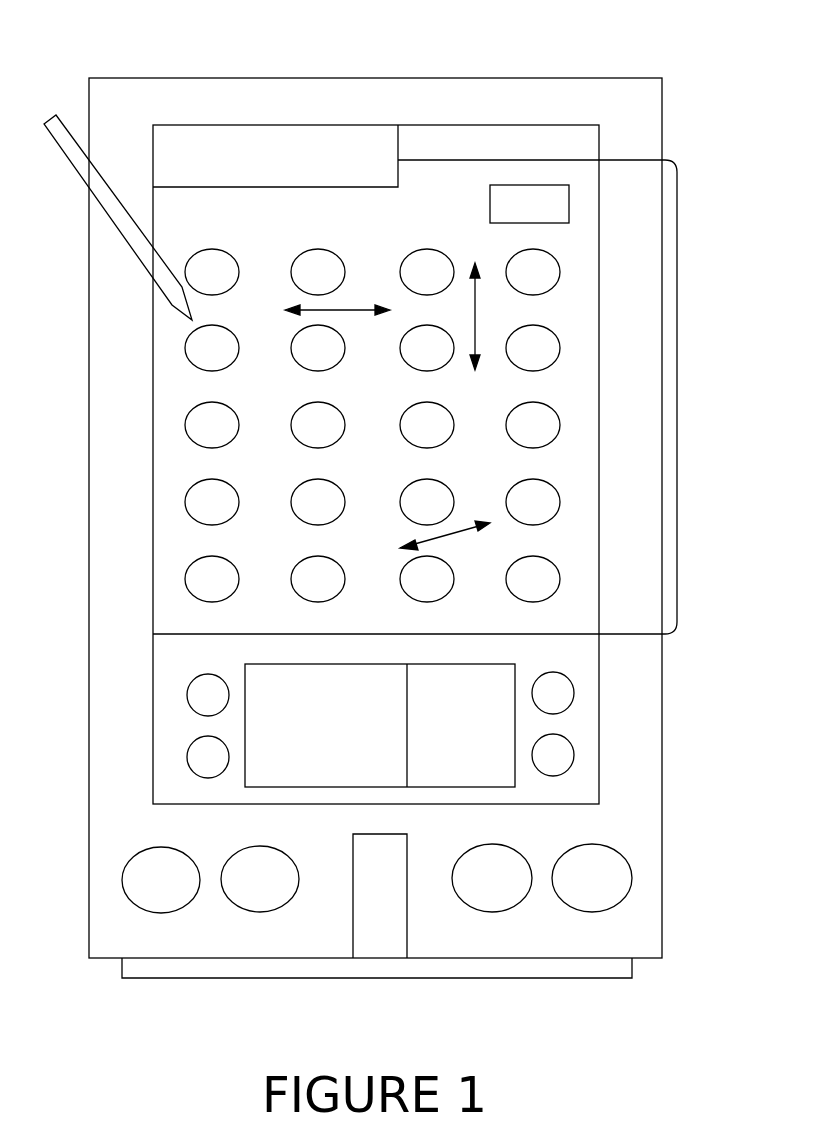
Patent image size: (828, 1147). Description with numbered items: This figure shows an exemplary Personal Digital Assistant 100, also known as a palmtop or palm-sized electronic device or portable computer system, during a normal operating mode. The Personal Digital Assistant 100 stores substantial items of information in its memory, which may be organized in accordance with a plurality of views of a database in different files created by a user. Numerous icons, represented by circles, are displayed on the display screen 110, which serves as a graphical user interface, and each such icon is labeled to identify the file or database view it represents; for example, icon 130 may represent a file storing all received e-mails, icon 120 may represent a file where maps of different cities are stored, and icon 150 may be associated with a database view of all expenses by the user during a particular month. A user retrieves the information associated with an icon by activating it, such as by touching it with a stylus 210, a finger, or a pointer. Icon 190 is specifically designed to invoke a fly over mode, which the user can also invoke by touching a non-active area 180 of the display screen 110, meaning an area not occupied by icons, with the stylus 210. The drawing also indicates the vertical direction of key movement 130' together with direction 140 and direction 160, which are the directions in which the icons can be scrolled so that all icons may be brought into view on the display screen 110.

The Personal Digital Assistant 100 is at (57, 28).
The display screen 110 is at (677, 378).
The icon 120 is at (548, 357).
The icon 130 is at (372, 425).
The vertical direction of key movement 130' is at (502, 316).
The direction 140 is at (353, 310).
The icon 150 is at (442, 434).
The direction 160 is at (462, 532).
The non-active area 180 is at (168, 542).
The icon 190 is at (545, 215).
The stylus 210 is at (60, 150).